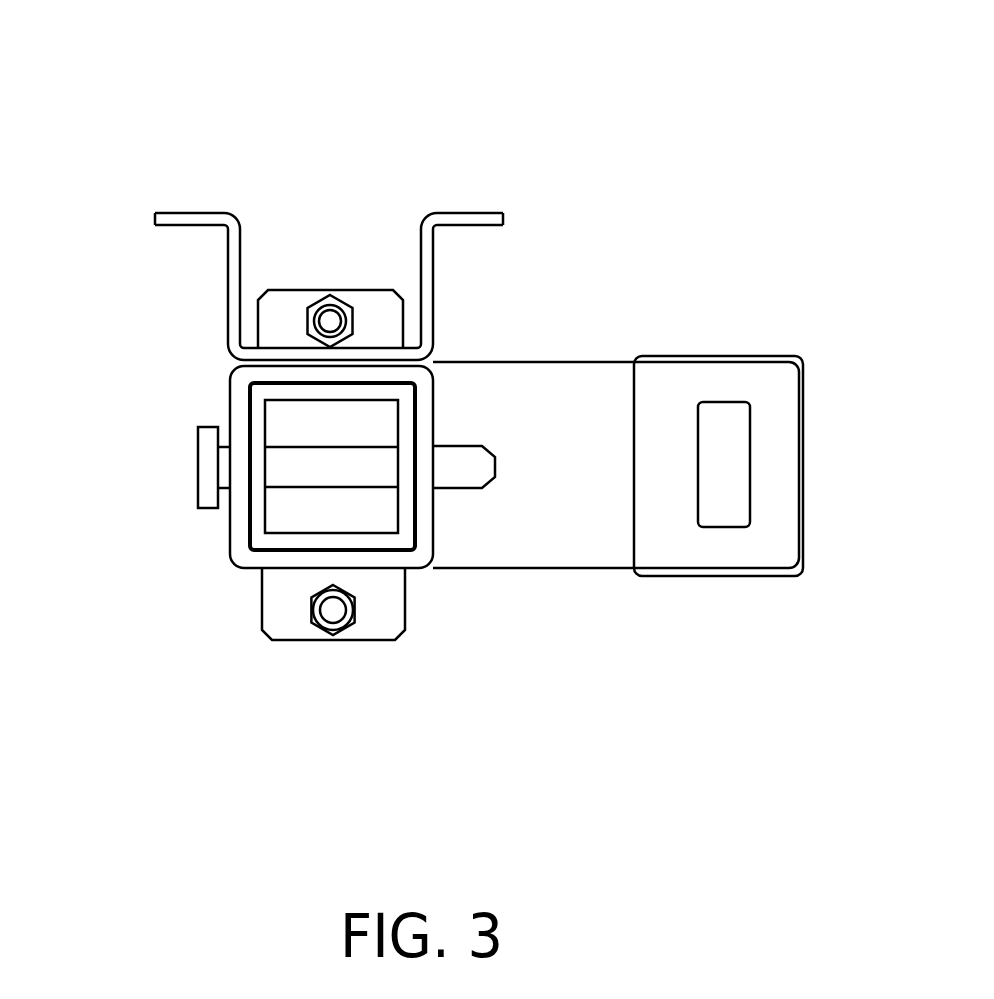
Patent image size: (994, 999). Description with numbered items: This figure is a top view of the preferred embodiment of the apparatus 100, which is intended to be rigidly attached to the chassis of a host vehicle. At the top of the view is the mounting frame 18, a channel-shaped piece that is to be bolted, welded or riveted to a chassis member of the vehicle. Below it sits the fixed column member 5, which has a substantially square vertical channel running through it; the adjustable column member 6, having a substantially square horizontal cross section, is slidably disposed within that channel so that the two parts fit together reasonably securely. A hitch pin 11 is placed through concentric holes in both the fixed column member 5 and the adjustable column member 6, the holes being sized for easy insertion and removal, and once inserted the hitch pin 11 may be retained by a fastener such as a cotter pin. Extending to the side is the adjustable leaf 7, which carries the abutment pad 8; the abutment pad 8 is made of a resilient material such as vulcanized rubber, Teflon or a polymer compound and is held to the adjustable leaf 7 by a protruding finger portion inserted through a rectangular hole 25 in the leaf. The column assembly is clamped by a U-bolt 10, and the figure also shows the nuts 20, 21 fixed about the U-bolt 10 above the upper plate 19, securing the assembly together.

The apparatus 100 is at (505, 178).
The fixed column member 5 is at (237, 392).
The adjustable column member 6 is at (260, 538).
The adjustable leaf 7 is at (527, 530).
The abutment pad 8 is at (732, 575).
The U-bolt 10 is at (335, 610).
The hitch pin 11 is at (205, 473).
The mounting frame 18 is at (235, 258).
The upper plate 19 is at (285, 617).
The nut 20 is at (333, 632).
The nut 21 is at (328, 297).
The rectangular hole 25 is at (726, 405).